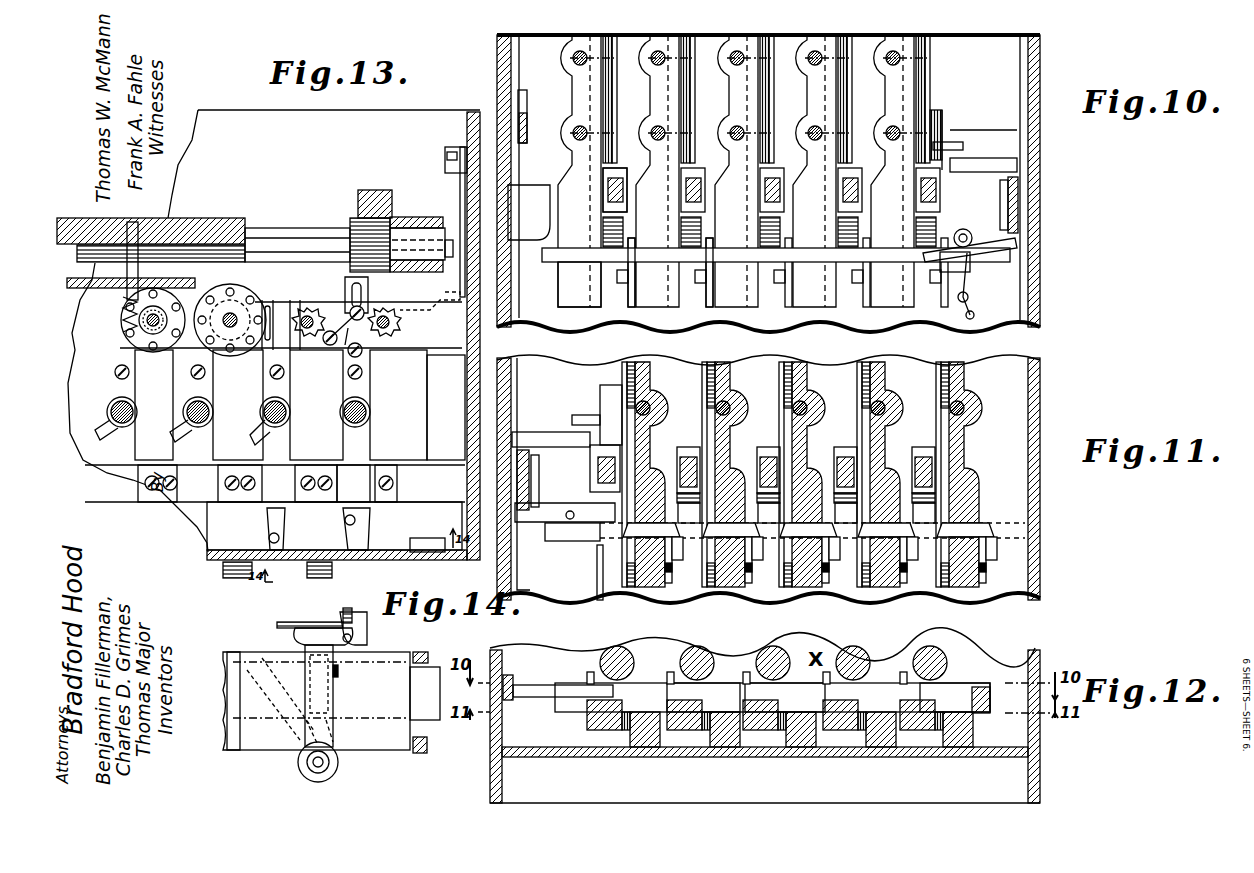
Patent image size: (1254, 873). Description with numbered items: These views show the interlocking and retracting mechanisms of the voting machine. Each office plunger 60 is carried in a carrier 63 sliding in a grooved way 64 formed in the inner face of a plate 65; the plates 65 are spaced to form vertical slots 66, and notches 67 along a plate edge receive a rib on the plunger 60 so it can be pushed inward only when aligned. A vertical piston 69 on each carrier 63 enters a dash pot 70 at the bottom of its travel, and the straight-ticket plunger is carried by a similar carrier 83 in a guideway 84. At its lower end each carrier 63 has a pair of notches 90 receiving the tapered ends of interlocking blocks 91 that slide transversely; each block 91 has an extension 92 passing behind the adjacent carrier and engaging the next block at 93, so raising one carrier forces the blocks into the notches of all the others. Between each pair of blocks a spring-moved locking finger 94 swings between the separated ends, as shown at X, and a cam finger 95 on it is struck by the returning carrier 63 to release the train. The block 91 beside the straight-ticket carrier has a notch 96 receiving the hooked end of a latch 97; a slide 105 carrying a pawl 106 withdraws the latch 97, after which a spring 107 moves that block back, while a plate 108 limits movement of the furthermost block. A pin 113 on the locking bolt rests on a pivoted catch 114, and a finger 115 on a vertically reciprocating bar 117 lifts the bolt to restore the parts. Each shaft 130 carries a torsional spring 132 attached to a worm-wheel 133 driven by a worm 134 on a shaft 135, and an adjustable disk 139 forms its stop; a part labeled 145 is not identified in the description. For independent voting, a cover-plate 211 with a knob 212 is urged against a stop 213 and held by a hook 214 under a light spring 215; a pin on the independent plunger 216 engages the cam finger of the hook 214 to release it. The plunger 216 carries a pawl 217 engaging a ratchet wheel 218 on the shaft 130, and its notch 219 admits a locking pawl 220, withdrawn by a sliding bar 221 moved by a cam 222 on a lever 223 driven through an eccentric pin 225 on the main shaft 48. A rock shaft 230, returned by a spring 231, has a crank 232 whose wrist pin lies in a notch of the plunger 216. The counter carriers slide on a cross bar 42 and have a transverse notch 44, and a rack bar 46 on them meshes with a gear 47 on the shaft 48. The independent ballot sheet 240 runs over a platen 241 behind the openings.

In FIG. 13, the cross bar 42 is at (225, 218).
In FIG. 10, the transverse notch 44 is at (940, 285).
In FIG. 11, the transverse notch 44 is at (600, 600).
In FIG. 13, the rack bar 46 is at (375, 190).
In FIG. 13, the gear 47 is at (352, 220).
In FIG. 13, the main shaft 48 is at (282, 200).
In FIG. 10, the plunger 60 is at (606, 192).
In FIG. 11, the plunger 60 is at (690, 460).
In FIG. 10, the carrier 63 is at (770, 338).
In FIG. 11, the carrier 63 is at (790, 420).
In FIG. 12, the carrier 63 is at (920, 735).
In FIG. 11, the grooved way 64 is at (780, 372).
In FIG. 12, the grooved way 64 is at (708, 735).
In FIG. 10, the plate 65 is at (718, 94).
In FIG. 10, the vertical slot 66 is at (578, 78).
In FIG. 10, the notch 67 is at (722, 156).
In FIG. 12, the vertical piston 69 is at (700, 655).
In FIG. 12, the dash pot 70 is at (780, 655).
In FIG. 10, the carrier 83 is at (945, 135).
In FIG. 11, the carrier 83 is at (680, 383).
In FIG. 10, the guideway 84 is at (625, 338).
In FIG. 12, the guideway 84 is at (628, 735).
In FIG. 11, the notch 90 is at (960, 480).
In FIG. 12, the notch 90 is at (848, 735).
In FIG. 10, the interlocking block 91 is at (572, 258).
In FIG. 11, the interlocking block 91 is at (965, 530).
In FIG. 12, the interlocking block 91 is at (725, 685).
In FIG. 10, the extension 92 is at (652, 284).
In FIG. 12, the extension 92 is at (680, 685).
In FIG. 12, the engagement point 93 is at (725, 735).
In FIG. 10, the locking finger 94 is at (705, 283).
In FIG. 12, the locking finger 94 is at (745, 672).
In FIG. 10, the cam finger 95 is at (625, 283).
In FIG. 11, the cam finger 95 is at (925, 605).
In FIG. 10, the notch 96 is at (960, 265).
In FIG. 11, the notch 96 is at (592, 542).
In FIG. 10, the latch 97 is at (975, 212).
In FIG. 11, the latch 97 is at (575, 510).
In FIG. 12, the latch 97 is at (540, 685).
In FIG. 10, the slide 105 is at (1040, 190).
In FIG. 11, the slide 105 is at (522, 450).
In FIG. 10, the pawl 106 is at (1040, 222).
In FIG. 11, the pawl 106 is at (540, 478).
In FIG. 10, the spring 107 is at (968, 290).
In FIG. 12, the plate 108 is at (990, 690).
In FIG. 10, the pin 113 is at (965, 146).
In FIG. 11, the pin 113 is at (580, 415).
In FIG. 10, the catch 114 is at (987, 204).
In FIG. 11, the catch 114 is at (590, 455).
In FIG. 10, the finger 115 is at (1017, 165).
In FIG. 11, the finger 115 is at (560, 432).
In FIG. 10, the bar 117 is at (1040, 70).
In FIG. 11, the bar 117 is at (512, 365).
In FIG. 12, the bar 117 is at (513, 705).
In FIG. 13, the shaft 130 is at (305, 310).
In FIG. 13, the torsional spring 132 is at (205, 306).
In FIG. 13, the worm-wheel 133 is at (158, 308).
In FIG. 13, the worm 134 is at (125, 322).
In FIG. 13, the shaft 135 is at (185, 218).
In FIG. 13, the disk 139 is at (258, 283).
In FIG. 11, the head 145 is at (860, 408).
In FIG. 14, the cover-plate 211 is at (322, 710).
In FIG. 14, the operating knob 212 is at (330, 770).
In FIG. 14, the stop 213 is at (340, 672).
In FIG. 13, the hook 214 is at (222, 578).
In FIG. 14, the hook 214 is at (322, 635).
In FIG. 14, the spring 215 is at (295, 625).
In FIG. 13, the independent plunger 216 is at (380, 438).
In FIG. 14, the independent plunger 216 is at (346, 600).
In FIG. 13, the pawl 217 is at (112, 372).
In FIG. 13, the ratchet wheel 218 is at (405, 328).
In FIG. 13, the notch 219 is at (362, 310).
In FIG. 13, the locking pawl 220 is at (345, 305).
In FIG. 13, the sliding bar 221 is at (430, 293).
In FIG. 13, the cam 222 is at (432, 240).
In FIG. 13, the lever 223 is at (458, 180).
In FIG. 13, the eccentric pin 225 is at (450, 240).
In FIG. 13, the rock shaft 230 is at (340, 425).
In FIG. 13, the spring 231 is at (175, 432).
In FIG. 13, the crank 232 is at (118, 405).
In FIG. 13, the independent ballot sheet 240 is at (445, 405).
In FIG. 14, the independent ballot sheet 240 is at (405, 725).
In FIG. 13, the platen 241 is at (420, 538).
In FIG. 14, the platen 241 is at (420, 680).